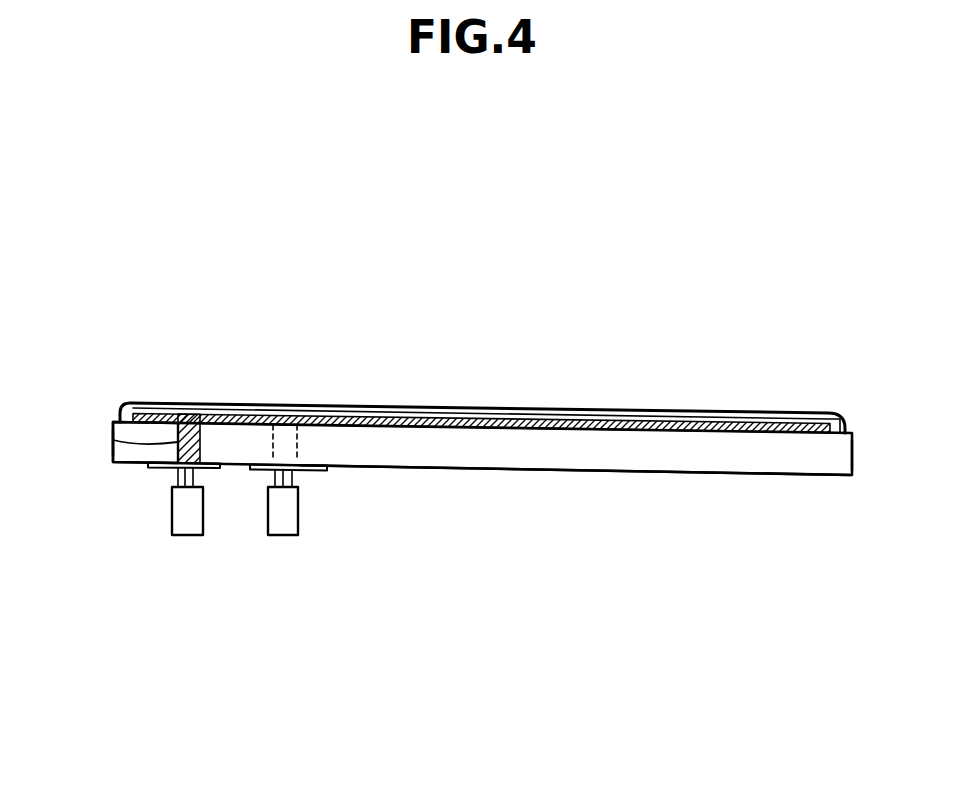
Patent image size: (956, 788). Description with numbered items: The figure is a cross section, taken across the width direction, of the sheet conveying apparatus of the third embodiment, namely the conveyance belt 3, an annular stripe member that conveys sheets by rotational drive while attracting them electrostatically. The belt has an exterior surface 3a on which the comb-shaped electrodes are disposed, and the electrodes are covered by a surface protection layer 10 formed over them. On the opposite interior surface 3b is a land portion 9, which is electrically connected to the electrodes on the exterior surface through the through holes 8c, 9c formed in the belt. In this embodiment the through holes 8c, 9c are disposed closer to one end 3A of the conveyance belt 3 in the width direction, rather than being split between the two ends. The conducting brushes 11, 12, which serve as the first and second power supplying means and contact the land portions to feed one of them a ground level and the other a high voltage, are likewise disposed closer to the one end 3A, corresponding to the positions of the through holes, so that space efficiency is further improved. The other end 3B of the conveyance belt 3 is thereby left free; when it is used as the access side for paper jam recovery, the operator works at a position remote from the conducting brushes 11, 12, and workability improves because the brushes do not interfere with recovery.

The conveyance belt 3 is at (500, 460).
The exterior surface 3a is at (613, 411).
The interior surface 3b is at (690, 475).
The one end 3A is at (120, 470).
The other end 3B is at (800, 487).
The through hole 8c is at (300, 440).
The land portion 9 is at (457, 418).
The through hole 9c is at (113, 441).
The surface protection layer 10 is at (530, 409).
The conducting brush 11 is at (285, 536).
The conducting brush 12 is at (188, 534).